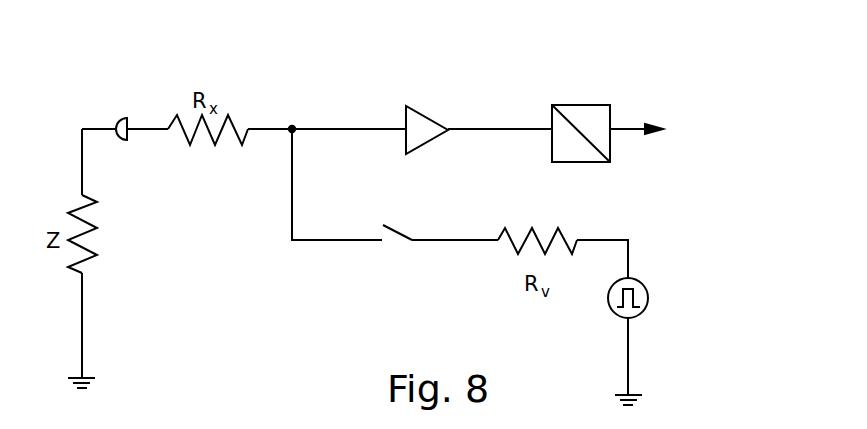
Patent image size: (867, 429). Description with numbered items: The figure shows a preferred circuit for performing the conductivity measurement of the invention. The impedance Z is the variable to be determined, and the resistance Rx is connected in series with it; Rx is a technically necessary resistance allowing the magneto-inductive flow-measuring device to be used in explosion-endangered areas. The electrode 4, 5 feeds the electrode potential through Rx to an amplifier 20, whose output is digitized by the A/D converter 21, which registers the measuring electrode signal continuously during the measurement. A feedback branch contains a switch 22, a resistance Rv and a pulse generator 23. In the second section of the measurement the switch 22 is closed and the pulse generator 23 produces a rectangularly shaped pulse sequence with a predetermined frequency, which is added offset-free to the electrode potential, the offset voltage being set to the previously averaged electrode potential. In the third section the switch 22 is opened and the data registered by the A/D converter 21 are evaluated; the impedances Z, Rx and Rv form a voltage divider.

The electrode 4 is at (136, 82).
The electrode 5 is at (118, 118).
The amplifier 20 is at (422, 123).
The A/D converter 21 is at (577, 113).
The switch 22 is at (390, 243).
The pulse generator 23 is at (647, 293).